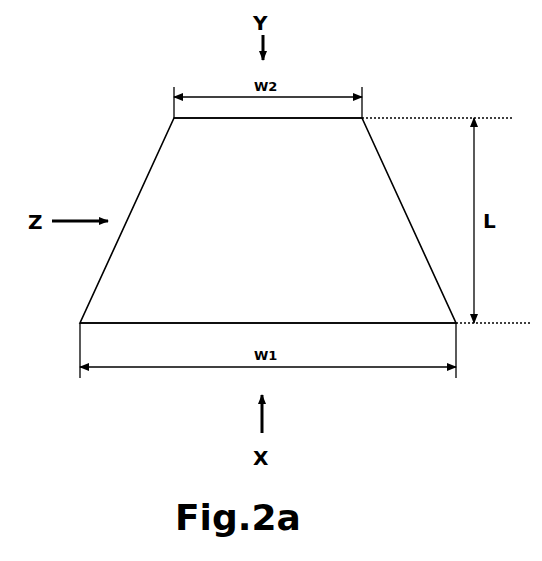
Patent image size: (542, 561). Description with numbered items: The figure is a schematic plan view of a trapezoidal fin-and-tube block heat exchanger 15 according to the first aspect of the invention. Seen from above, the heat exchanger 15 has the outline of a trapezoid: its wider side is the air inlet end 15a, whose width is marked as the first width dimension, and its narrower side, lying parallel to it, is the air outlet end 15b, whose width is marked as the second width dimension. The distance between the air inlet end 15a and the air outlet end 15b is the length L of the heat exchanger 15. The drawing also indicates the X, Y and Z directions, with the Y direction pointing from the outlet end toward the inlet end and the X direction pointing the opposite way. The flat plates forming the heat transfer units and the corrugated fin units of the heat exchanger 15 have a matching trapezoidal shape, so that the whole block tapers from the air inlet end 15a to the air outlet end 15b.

The trapezoidal fin-and-tube block heat exchanger 15 is at (287, 234).
The air inlet end 15a is at (177, 323).
The air outlet end 15b is at (235, 118).